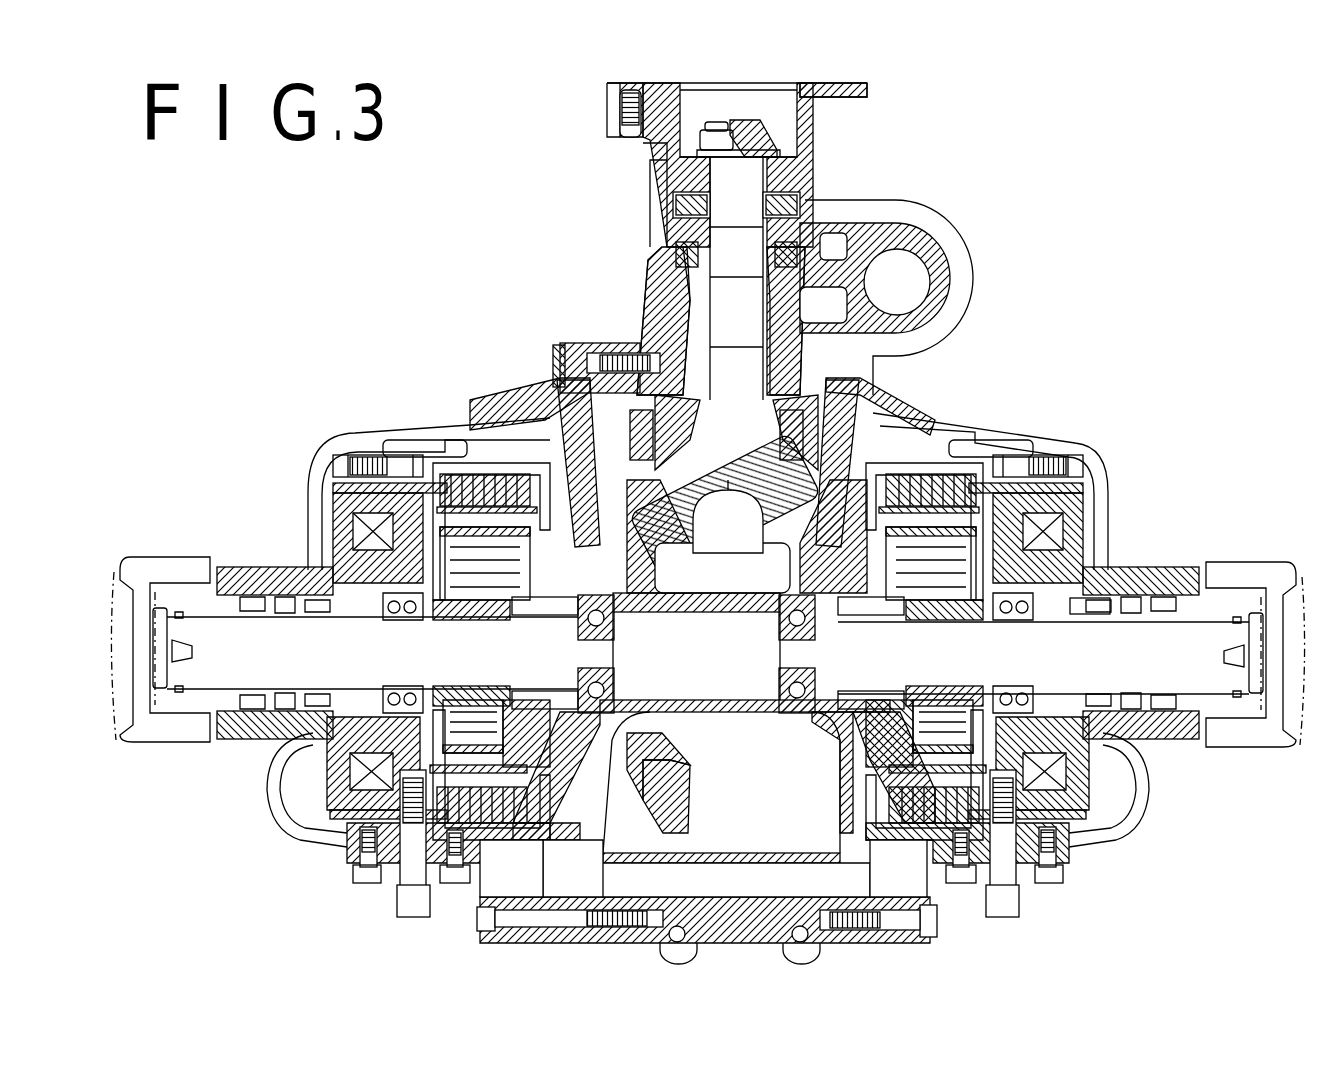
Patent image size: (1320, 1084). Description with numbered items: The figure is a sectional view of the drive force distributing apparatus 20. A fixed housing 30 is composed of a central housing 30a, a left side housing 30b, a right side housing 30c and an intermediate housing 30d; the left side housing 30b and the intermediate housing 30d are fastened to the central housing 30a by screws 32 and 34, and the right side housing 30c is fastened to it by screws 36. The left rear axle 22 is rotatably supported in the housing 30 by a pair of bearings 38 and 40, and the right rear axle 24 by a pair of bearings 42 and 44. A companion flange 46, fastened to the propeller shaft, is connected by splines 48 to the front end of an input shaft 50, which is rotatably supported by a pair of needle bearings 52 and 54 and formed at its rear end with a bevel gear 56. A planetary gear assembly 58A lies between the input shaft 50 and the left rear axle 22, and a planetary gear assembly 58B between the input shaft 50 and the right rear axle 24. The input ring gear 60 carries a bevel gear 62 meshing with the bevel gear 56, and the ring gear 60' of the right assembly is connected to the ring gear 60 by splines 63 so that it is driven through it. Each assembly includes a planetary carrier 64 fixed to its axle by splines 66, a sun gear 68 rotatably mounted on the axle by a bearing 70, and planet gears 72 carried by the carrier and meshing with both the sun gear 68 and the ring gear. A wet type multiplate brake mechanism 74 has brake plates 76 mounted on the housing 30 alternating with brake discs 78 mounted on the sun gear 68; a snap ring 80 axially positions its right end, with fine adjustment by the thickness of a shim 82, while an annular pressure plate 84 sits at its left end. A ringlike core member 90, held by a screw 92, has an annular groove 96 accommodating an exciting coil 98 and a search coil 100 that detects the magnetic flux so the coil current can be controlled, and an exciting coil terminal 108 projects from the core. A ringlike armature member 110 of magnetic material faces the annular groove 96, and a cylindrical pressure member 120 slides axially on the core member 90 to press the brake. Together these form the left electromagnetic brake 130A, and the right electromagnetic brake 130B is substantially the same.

The drive force distributing apparatus 20 is at (982, 368).
The left rear axle 22 is at (205, 640).
The right rear axle 24 is at (1195, 635).
The fixed housing 30 is at (598, 340).
The central housing 30a is at (628, 345).
The left side housing 30b is at (468, 440).
The right side housing 30c is at (992, 450).
The intermediate housing 30d is at (580, 347).
The screws 32 is at (556, 366).
The screws 34 is at (480, 917).
The screws 36 is at (938, 920).
The bearing 38 is at (326, 612).
The bearing 40 is at (595, 625).
The bearing 42 is at (1098, 615).
The bearing 44 is at (815, 620).
The companion flange 46 is at (622, 118).
The splines 48 is at (790, 168).
The input shaft 50 is at (752, 366).
The needle bearing 52 is at (678, 238).
The needle bearing 54 is at (648, 440).
The bevel gear 56 is at (812, 548).
The planetary gear assembly 58A is at (614, 783).
The planetary gear assembly 58B is at (838, 800).
The input ring gear 60 is at (724, 524).
The ring gear 60' is at (745, 735).
The bevel gear 62 is at (667, 800).
The splines 63 is at (674, 734).
The planetary carrier 64 is at (476, 760).
The splines 66 is at (544, 690).
The sun gear 68 is at (446, 620).
The bearing 70 is at (405, 620).
The planet gears 72 is at (490, 602).
The wet type multiplate brake mechanism 74 is at (495, 452).
The brake plates 76 is at (470, 470).
The brake discs 78 is at (498, 490).
The snap ring 80 is at (560, 842).
The shim 82 is at (498, 832).
The annular pressure plate 84 is at (440, 448).
The ringlike core member 90 is at (362, 484).
The screw 92 is at (398, 462).
The annular groove 96 is at (337, 772).
The exciting coil 98 is at (362, 505).
The search coil 100 is at (378, 535).
The exciting coil terminal 108 is at (408, 898).
The ringlike armature member 110 is at (320, 806).
The cylindrical pressure member 120 is at (362, 840).
The left electromagnetic brake 130A is at (316, 451).
The right electromagnetic brake 130B is at (1097, 451).